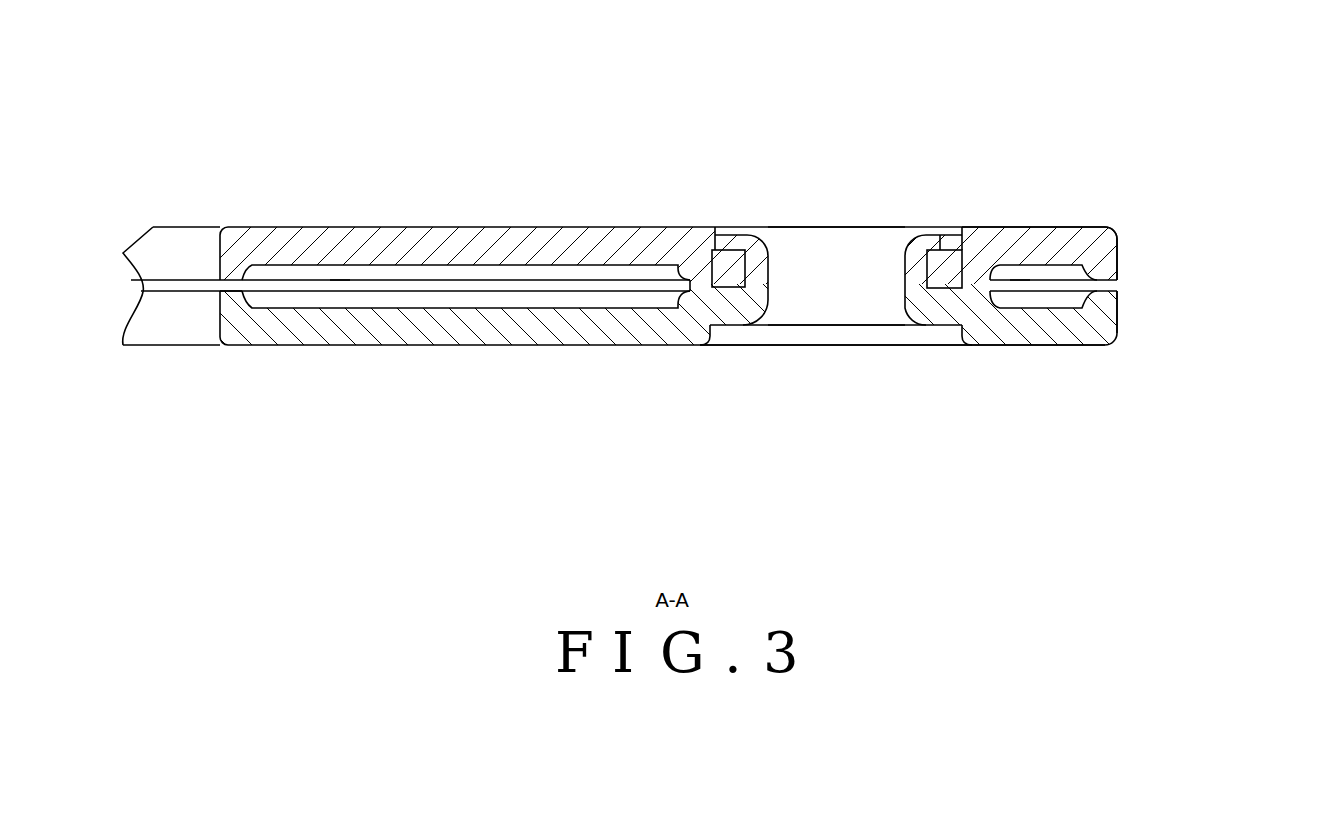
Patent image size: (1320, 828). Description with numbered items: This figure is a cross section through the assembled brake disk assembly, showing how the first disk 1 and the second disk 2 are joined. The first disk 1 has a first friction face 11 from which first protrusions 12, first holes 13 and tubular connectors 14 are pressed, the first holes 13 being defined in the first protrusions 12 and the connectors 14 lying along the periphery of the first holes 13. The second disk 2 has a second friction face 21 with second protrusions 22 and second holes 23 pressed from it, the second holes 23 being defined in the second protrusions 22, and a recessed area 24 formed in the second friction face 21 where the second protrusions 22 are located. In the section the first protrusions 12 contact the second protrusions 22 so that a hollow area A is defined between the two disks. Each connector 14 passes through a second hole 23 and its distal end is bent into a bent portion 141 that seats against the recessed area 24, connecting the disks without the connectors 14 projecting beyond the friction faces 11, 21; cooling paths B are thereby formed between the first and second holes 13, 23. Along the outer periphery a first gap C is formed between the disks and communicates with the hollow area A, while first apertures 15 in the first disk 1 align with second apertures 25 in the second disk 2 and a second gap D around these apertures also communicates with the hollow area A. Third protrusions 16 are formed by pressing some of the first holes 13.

The first disk 1 is at (1117, 315).
The first friction face 11 is at (1070, 347).
The first protrusions 12 is at (945, 320).
The first holes 13 is at (840, 335).
The connectors 14 is at (925, 310).
The bent portion 141 is at (963, 232).
The first apertures 15 is at (178, 330).
The third protrusions 16 is at (235, 295).
The second disk 2 is at (1118, 252).
The second friction face 21 is at (1092, 228).
The second protrusions 22 is at (990, 268).
The second holes 23 is at (815, 228).
The recessed area 24 is at (957, 240).
The second apertures 25 is at (180, 243).
The hollow area A is at (1020, 287).
The cooling paths B is at (842, 272).
The first gap C is at (1117, 290).
The second gap D is at (230, 292).